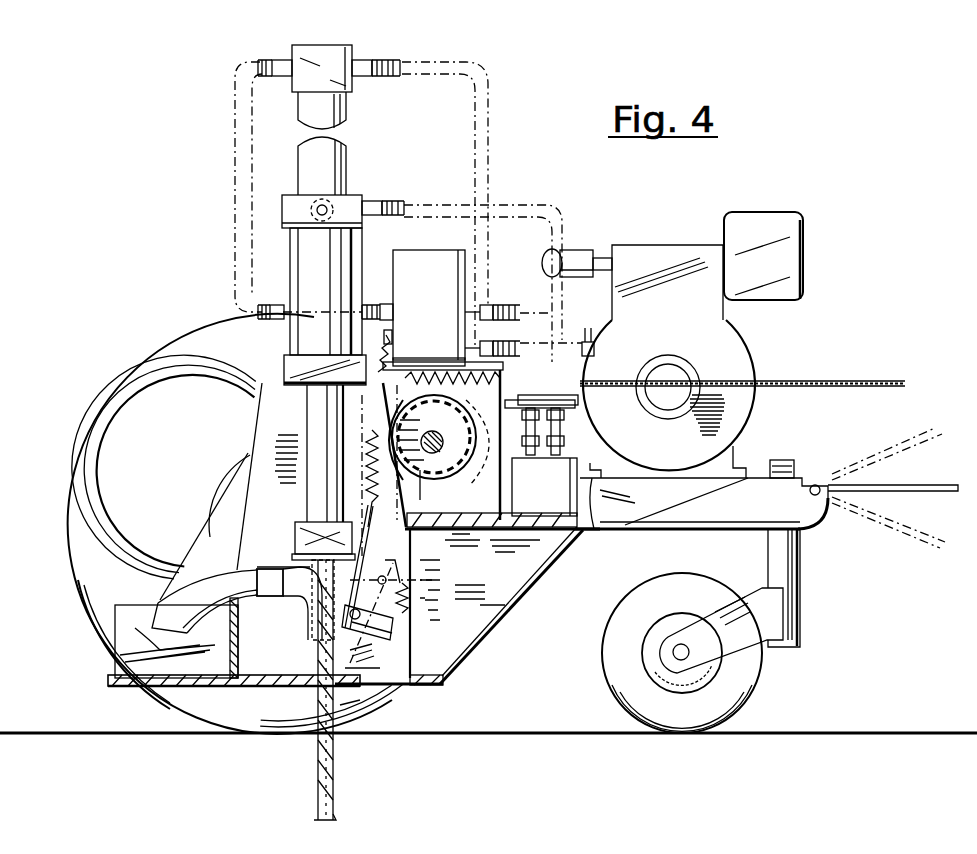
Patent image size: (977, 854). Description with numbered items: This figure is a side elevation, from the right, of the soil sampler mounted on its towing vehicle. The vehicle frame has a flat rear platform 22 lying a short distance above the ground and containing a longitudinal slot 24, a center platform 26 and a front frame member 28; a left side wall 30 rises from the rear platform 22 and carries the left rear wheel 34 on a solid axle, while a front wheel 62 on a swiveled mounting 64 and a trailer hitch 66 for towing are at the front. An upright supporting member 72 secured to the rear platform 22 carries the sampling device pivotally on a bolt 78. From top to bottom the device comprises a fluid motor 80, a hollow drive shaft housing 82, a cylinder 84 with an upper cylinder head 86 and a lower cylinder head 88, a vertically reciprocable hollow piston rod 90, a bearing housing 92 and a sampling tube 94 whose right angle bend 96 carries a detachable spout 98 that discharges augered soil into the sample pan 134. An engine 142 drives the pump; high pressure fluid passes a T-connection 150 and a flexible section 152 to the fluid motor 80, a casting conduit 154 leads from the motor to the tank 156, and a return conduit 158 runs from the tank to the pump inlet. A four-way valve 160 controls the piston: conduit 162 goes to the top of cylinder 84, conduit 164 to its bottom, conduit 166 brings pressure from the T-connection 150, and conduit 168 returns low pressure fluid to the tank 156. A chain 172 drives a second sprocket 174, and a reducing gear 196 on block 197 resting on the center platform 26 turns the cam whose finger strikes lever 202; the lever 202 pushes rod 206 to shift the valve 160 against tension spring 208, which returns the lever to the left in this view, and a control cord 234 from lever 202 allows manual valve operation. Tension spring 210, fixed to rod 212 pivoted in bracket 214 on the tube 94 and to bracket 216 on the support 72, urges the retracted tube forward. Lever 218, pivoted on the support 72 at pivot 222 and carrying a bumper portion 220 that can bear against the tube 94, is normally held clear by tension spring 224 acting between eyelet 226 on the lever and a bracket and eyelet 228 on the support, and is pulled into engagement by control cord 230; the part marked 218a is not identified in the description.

The rear platform 22 is at (143, 687).
The longitudinal slot 24 is at (406, 686).
The center platform 26 is at (472, 530).
The front frame member 28 is at (745, 508).
The left side wall 30 is at (505, 600).
The left rear wheel 34 is at (118, 406).
The front wheel 62 is at (630, 622).
The swiveled mounting 64 is at (800, 645).
The trailer hitch 66 is at (938, 485).
The upright supporting member 72 is at (288, 246).
The bolt 78 is at (354, 202).
The fluid motor 80 is at (345, 52).
The drive shaft housing 82 is at (347, 165).
The cylinder 84 is at (340, 262).
The upper cylinder head 86 is at (297, 206).
The lower cylinder head 88 is at (285, 368).
The piston rod 90 is at (310, 476).
The bearing housing 92 is at (295, 538).
The sampling tube 94 is at (335, 758).
The right angle bend 96 is at (305, 596).
The spout 98 is at (222, 584).
The sample pan 134 is at (132, 650).
The prime mover 142 is at (748, 374).
The T-connection 150 is at (582, 383).
The flexible section 152 is at (392, 74).
The casting conduit 154 is at (258, 62).
The tank 156 is at (425, 258).
The return conduit 158 is at (586, 342).
The four-way valve 160 is at (574, 535).
The conduit 162 is at (400, 201).
The conduit 164 is at (478, 350).
The conduit 166 is at (550, 448).
The conduit 168 is at (500, 306).
The chain 172 is at (438, 527).
The second sprocket 174 is at (432, 480).
The reducing gear 196 is at (452, 530).
The block 197 is at (505, 548).
The lever 202 is at (457, 424).
The rod 206 is at (544, 487).
The tension spring 208 is at (395, 388).
The tension spring 210 is at (374, 470).
The rod 212 is at (382, 576).
The bracket 214 is at (318, 640).
The bracket 216 is at (393, 350).
The lever 218 is at (405, 614).
The lever stop 218a is at (368, 700).
The bumper portion 220 is at (410, 634).
The pivot 222 is at (367, 617).
The tension spring 224 is at (438, 592).
The eyelet 226 is at (373, 655).
The bracket and eyelet 228 is at (452, 530).
The control cord 230 is at (368, 540).
The control cord 234 is at (852, 382).